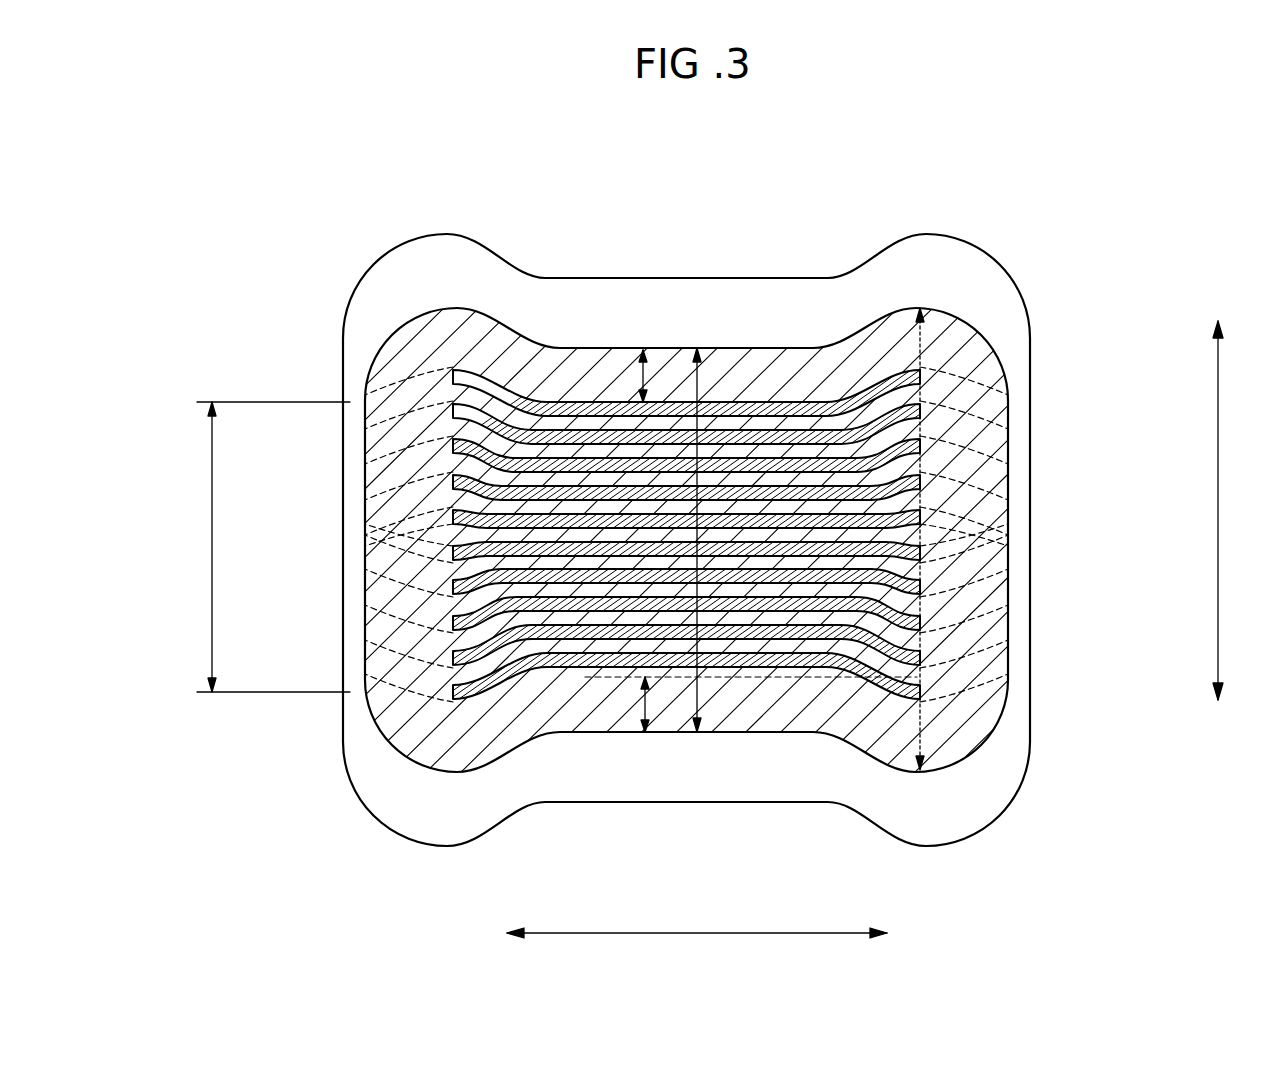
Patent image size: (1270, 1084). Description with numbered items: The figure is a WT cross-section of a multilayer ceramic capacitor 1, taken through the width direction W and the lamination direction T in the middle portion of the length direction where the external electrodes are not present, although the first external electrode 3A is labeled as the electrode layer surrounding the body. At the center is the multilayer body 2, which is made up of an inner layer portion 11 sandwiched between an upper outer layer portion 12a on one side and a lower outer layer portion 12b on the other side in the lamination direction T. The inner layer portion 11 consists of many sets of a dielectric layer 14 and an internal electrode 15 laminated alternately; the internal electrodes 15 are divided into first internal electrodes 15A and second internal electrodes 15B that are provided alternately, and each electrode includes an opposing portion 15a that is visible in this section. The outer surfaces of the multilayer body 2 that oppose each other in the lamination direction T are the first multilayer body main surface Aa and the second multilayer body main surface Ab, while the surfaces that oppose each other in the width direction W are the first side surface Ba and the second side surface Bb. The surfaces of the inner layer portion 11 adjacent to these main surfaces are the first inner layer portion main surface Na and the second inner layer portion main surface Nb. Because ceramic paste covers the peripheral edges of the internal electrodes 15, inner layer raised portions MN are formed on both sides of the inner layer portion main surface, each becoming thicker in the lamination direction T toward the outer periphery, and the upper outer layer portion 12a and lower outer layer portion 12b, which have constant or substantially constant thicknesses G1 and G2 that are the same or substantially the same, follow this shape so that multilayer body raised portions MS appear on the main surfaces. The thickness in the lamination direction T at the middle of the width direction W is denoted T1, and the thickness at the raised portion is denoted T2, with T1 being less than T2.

The multilayer ceramic capacitor 1 is at (560, 162).
The multilayer body 2 is at (773, 335).
The first external electrode 3A is at (906, 240).
The inner layer portion 11 is at (263, 547).
The upper outer layer portion 12a is at (427, 327).
The lower outer layer portion 12b is at (427, 755).
The dielectric layer 14 is at (470, 527).
The internal electrode 15 is at (665, 543).
The first internal electrode 15A is at (398, 460).
The second internal electrode 15B is at (398, 493).
The opposing portion 15a is at (592, 662).
The first side surface Ba is at (364, 633).
The second side surface Bb is at (1009, 633).
The first inner layer portion main surface Na is at (577, 400).
The second inner layer portion main surface Nb is at (740, 678).
The first multilayer body main surface Aa is at (738, 348).
The second multilayer body main surface Ab is at (771, 733).
The multilayer body raised portion MS is at (921, 308).
The inner layer raised portion MN is at (921, 365).
The thickness of upper outer layer portion G1 is at (644, 350).
The thickness of lower outer layer portion G2 is at (645, 733).
The thickness at middle portion in width direction T1 is at (696, 733).
The thickness at raised portion T2 is at (996, 742).
The lamination direction T is at (1212, 510).
The width direction W is at (697, 947).